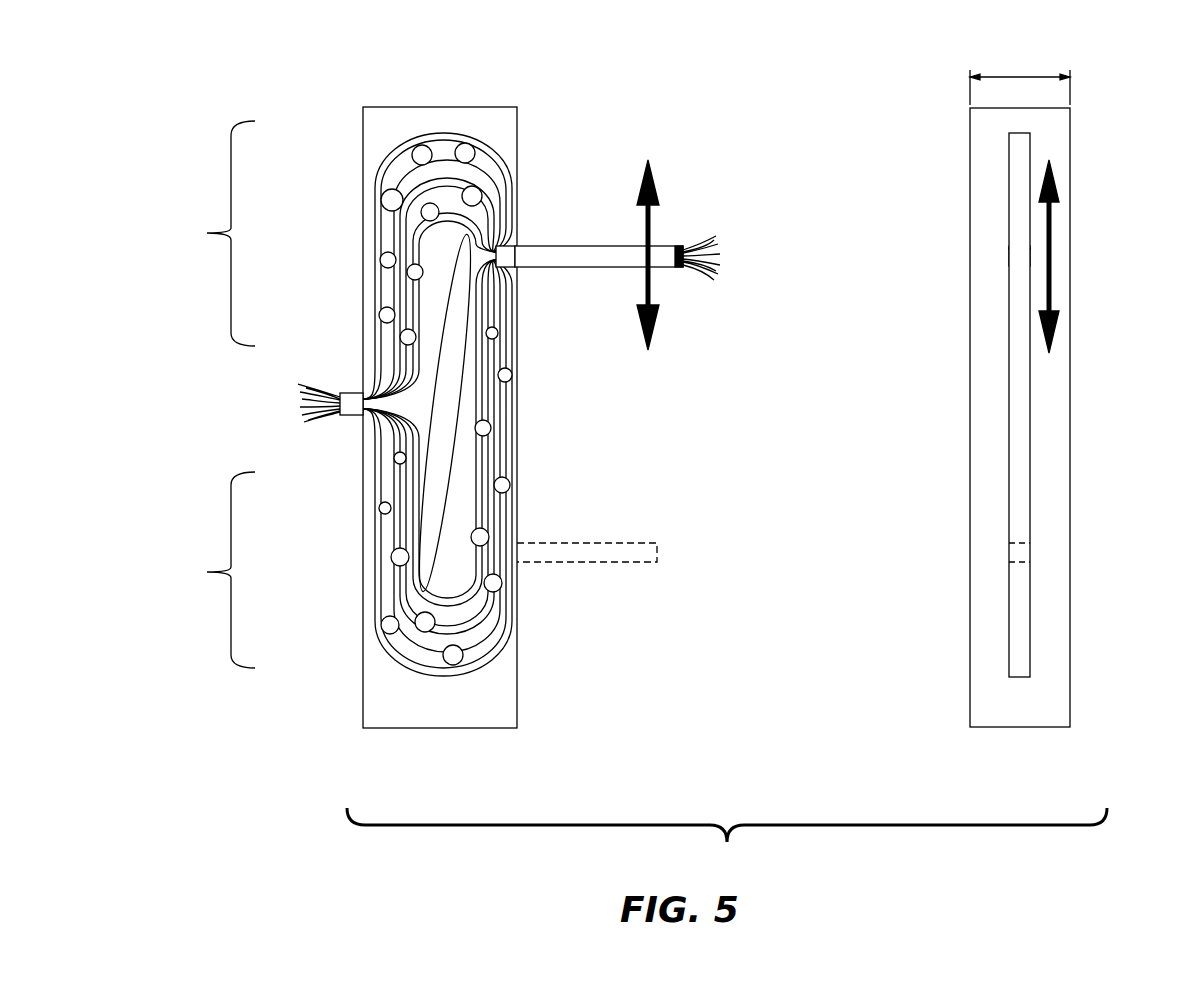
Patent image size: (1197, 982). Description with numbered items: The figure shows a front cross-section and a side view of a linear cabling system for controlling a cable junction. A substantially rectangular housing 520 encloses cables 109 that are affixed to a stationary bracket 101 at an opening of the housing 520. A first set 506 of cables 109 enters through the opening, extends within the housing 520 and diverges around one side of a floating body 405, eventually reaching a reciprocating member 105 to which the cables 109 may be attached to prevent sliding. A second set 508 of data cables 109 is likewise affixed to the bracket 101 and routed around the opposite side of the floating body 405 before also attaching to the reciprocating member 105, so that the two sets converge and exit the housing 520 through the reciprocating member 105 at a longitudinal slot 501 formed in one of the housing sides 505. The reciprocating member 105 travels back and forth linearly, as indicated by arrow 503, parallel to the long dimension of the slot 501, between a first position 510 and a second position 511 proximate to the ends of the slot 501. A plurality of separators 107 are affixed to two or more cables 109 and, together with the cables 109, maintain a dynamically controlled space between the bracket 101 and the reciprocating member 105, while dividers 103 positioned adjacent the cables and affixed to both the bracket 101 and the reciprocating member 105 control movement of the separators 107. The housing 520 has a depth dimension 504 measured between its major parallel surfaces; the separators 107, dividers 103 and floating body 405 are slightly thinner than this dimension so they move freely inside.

The stationary bracket 101 is at (350, 392).
The divider 103 is at (505, 205).
The reciprocating member 105 is at (531, 268).
The separators 107 is at (465, 143).
The cables 109 is at (503, 172).
The floating body 405 is at (476, 355).
The linear slot 501 is at (1018, 133).
The arrow 503 is at (653, 220).
The depth dimension 504 is at (1020, 77).
The housing side 505 is at (1048, 448).
The first set of cables 506 is at (205, 233).
The second set of cables 508 is at (205, 570).
The first position 510 is at (566, 246).
The second position 511 is at (657, 541).
The housing 520 is at (363, 662).